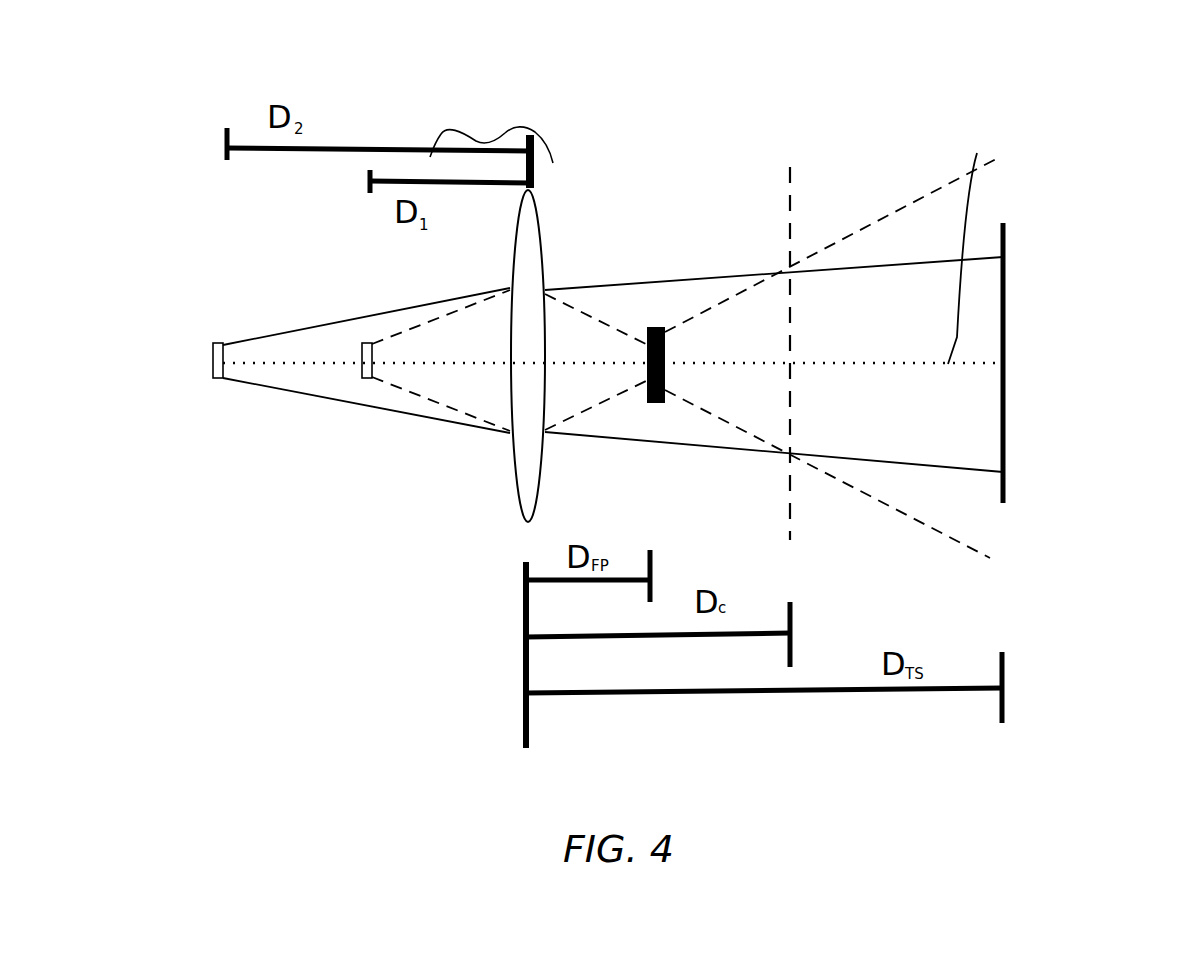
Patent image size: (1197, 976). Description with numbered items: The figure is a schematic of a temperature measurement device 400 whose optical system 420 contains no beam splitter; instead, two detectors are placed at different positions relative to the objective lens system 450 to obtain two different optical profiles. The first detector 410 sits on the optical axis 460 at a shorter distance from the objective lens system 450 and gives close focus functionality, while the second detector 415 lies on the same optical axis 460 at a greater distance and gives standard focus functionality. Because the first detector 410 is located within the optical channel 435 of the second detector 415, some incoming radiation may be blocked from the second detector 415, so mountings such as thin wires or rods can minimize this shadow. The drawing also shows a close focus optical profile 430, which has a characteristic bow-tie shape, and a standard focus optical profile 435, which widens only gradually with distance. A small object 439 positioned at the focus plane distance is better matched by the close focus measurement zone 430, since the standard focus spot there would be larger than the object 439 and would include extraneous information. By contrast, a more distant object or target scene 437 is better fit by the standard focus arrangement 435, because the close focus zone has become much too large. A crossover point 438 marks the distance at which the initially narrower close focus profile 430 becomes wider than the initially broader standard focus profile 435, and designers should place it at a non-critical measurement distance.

The device 400 is at (546, 697).
The first detector 410 is at (362, 374).
The second detector 415 is at (213, 348).
The optical system 420 is at (505, 133).
The close focus optical profile 430 is at (590, 407).
The standard focus optical profile 435 is at (957, 473).
The object/target scene 437 is at (1010, 241).
The crossover point 438 is at (793, 178).
The small object 439 is at (667, 358).
The objective lens system 450 is at (540, 213).
The optical axis 460 is at (977, 153).